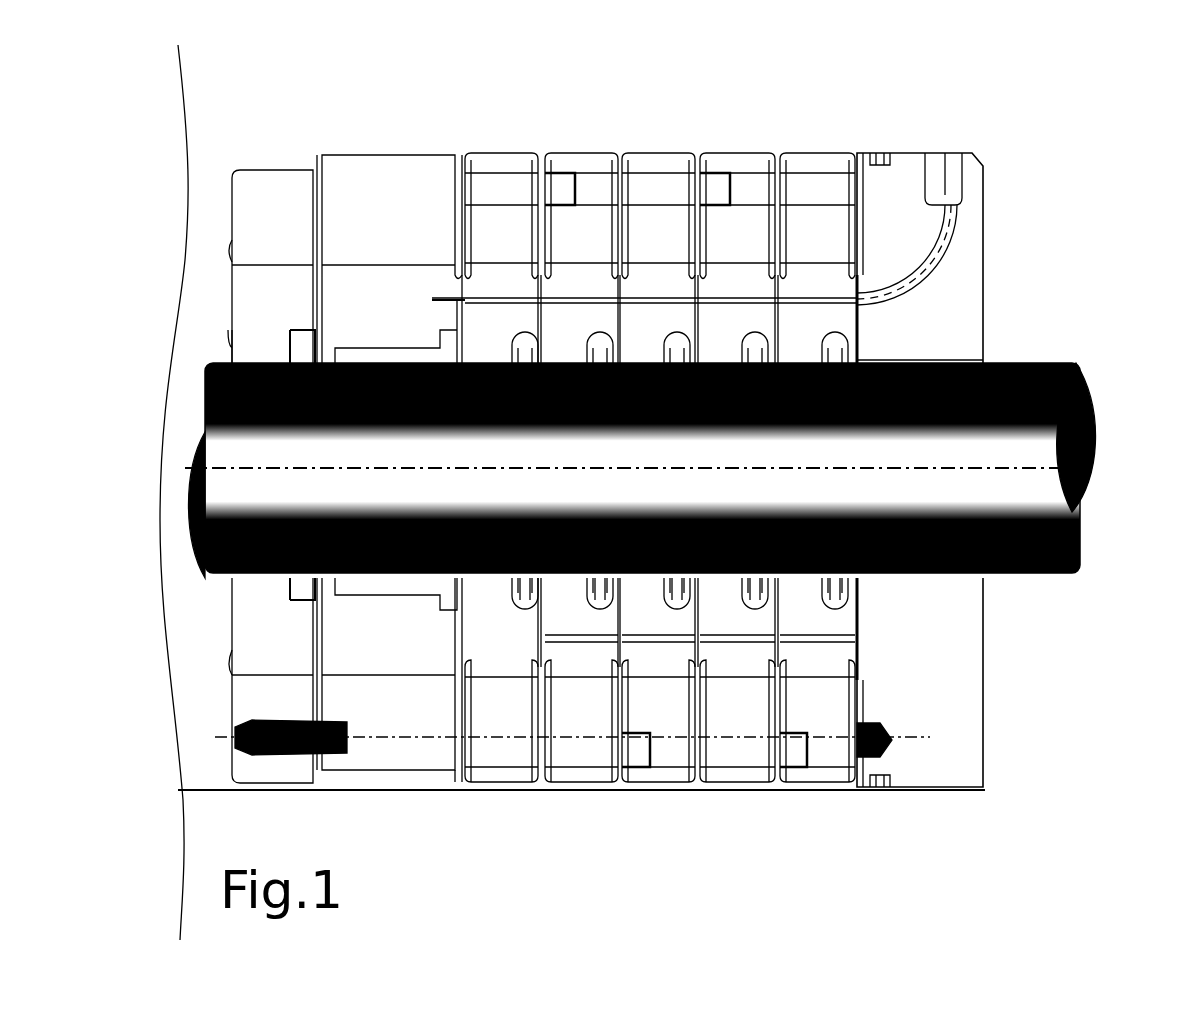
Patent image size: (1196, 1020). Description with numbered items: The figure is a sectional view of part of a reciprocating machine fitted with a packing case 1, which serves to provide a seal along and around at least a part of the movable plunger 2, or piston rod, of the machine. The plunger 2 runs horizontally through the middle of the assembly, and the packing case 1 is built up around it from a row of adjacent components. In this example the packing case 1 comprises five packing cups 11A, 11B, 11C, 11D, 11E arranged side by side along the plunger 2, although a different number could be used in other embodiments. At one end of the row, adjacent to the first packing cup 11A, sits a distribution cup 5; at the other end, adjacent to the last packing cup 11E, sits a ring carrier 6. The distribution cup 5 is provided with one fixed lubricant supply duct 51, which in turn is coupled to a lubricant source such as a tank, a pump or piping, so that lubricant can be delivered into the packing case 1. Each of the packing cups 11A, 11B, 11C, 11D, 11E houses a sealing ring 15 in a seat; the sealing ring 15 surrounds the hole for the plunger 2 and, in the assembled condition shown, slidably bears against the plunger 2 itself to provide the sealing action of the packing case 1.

The packing case 1 is at (785, 820).
The plunger 2 is at (980, 497).
The distribution cup 5 is at (968, 270).
The lubricant supply duct 51 is at (952, 190).
The ring carrier 6 is at (343, 172).
The first packing cup 11A is at (815, 163).
The packing cup 11B is at (742, 165).
The packing cup 11C is at (670, 160).
The packing cup 11D is at (593, 163).
The last packing cup 11E is at (493, 163).
The sealing ring 15 is at (827, 598).